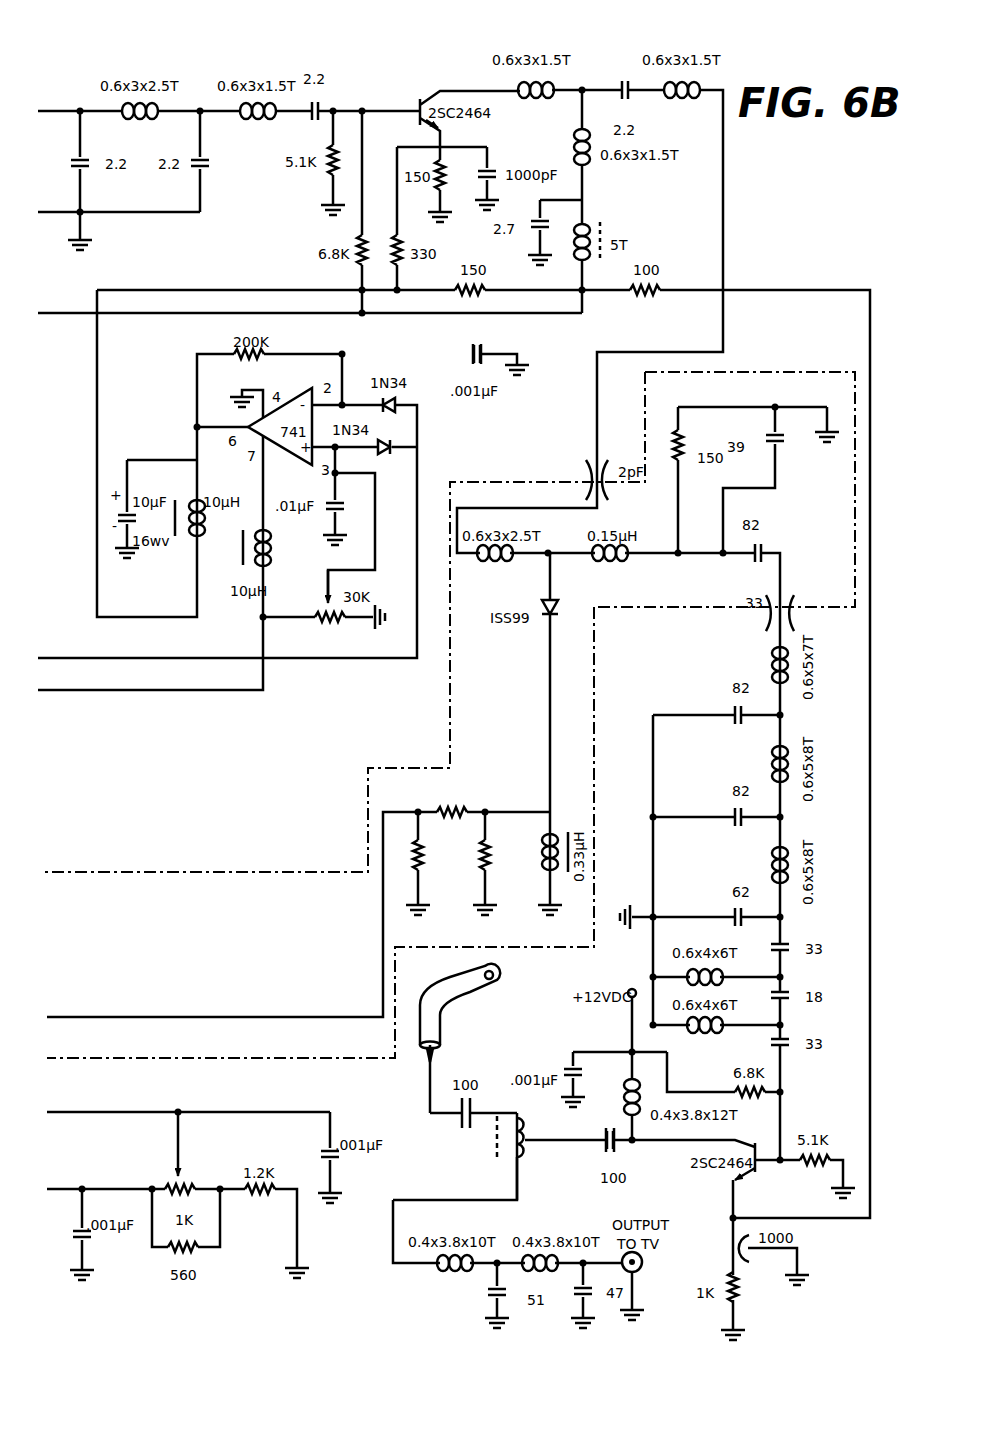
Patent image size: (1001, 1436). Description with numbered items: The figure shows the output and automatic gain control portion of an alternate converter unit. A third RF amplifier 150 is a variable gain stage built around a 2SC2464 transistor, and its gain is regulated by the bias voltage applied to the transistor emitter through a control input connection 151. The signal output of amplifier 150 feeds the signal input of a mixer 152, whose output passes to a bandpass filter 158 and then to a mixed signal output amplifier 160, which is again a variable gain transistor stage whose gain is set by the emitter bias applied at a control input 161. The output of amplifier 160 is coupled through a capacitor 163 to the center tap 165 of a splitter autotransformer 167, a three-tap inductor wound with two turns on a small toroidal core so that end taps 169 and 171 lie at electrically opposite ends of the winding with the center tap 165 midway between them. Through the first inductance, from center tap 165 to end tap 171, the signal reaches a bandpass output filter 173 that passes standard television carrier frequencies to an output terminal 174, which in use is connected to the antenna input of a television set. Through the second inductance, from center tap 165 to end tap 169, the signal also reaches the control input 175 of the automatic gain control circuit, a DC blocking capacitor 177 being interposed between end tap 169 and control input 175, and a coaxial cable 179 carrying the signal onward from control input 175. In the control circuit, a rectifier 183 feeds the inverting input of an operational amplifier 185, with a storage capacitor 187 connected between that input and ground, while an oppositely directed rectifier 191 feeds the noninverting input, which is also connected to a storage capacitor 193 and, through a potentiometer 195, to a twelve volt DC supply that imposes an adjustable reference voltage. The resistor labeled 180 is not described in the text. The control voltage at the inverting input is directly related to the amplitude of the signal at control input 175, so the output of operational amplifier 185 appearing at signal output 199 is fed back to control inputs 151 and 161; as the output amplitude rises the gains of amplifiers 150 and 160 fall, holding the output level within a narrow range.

The RF amplifier 150 is at (424, 86).
The control input connection 151 is at (396, 147).
The mixer 152 is at (777, 362).
The bandpass filter 158 is at (843, 828).
The output amplifier 160 is at (722, 1201).
The control input 161 is at (832, 1219).
The capacitor 163 is at (600, 1147).
The center tap 165 is at (577, 1138).
The splitter autotransformer 167 is at (478, 1160).
The end tap 169 is at (492, 1111).
The end tap 171 is at (515, 1189).
The bandpass output filter 173 is at (463, 1279).
The output terminal 174 is at (643, 1262).
The control input 175 is at (428, 1089).
The DC blocking capacitor 177 is at (463, 1135).
The coaxial cable 179 is at (467, 990).
The resistor 180 is at (453, 801).
The rectifier 183 is at (418, 416).
The operational amplifier 185 is at (294, 398).
The storage capacitor 187 is at (470, 346).
The rectifier 191 is at (418, 458).
The storage capacitor 193 is at (323, 507).
The potentiometer 195 is at (327, 627).
The signal output 199 is at (193, 442).